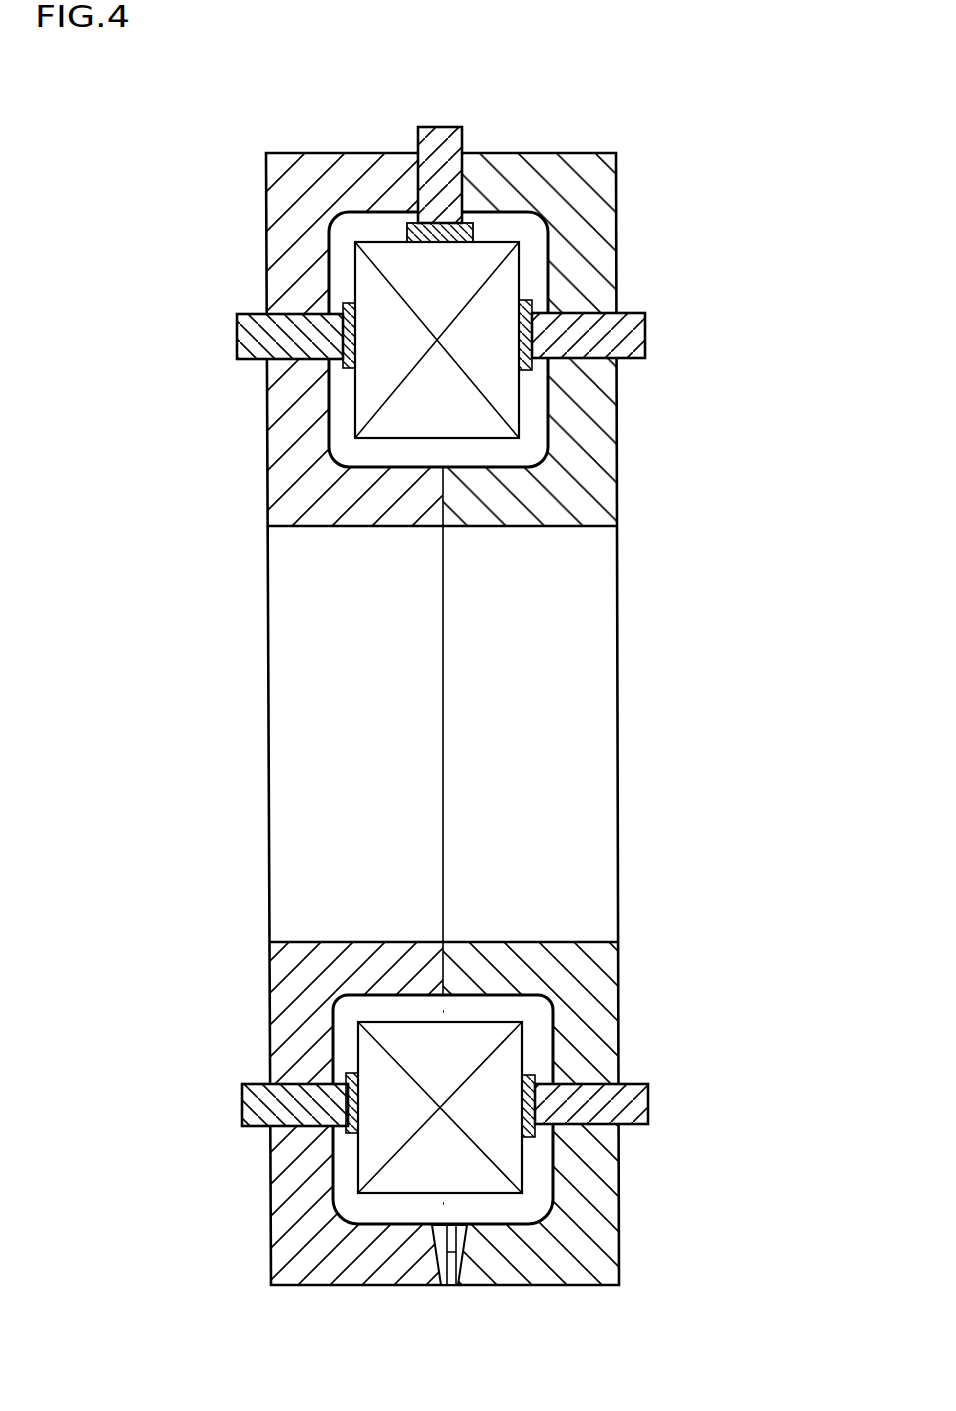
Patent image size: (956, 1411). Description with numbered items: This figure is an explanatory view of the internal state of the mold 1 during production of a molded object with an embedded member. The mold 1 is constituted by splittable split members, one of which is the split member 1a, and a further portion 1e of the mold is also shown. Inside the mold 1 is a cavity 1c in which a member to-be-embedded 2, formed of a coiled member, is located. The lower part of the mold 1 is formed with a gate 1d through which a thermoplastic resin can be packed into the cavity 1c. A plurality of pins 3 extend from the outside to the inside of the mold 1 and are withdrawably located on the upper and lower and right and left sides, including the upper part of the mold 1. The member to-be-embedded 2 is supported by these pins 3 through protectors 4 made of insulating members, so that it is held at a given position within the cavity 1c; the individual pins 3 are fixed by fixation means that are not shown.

The mold 1 is at (492, 670).
The split member 1a is at (530, 152).
The cavity 1c is at (536, 1203).
The gate 1d is at (470, 1262).
The upper left housing portion 1e is at (306, 154).
The member to-be-embedded 2 is at (520, 410).
The pin 3 is at (447, 127).
The protector 4 is at (404, 228).